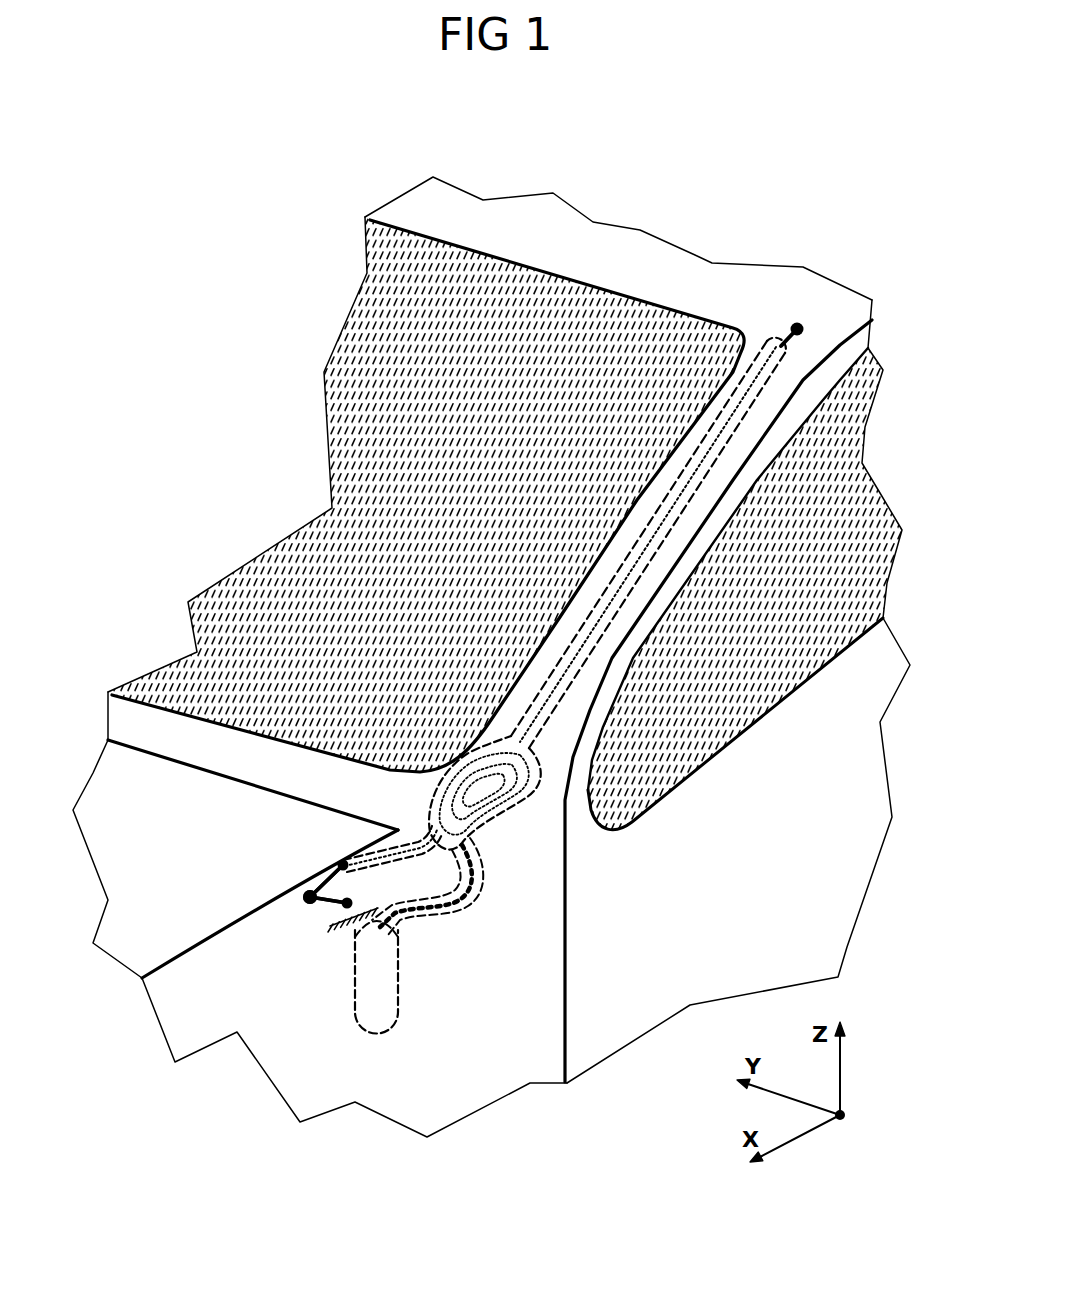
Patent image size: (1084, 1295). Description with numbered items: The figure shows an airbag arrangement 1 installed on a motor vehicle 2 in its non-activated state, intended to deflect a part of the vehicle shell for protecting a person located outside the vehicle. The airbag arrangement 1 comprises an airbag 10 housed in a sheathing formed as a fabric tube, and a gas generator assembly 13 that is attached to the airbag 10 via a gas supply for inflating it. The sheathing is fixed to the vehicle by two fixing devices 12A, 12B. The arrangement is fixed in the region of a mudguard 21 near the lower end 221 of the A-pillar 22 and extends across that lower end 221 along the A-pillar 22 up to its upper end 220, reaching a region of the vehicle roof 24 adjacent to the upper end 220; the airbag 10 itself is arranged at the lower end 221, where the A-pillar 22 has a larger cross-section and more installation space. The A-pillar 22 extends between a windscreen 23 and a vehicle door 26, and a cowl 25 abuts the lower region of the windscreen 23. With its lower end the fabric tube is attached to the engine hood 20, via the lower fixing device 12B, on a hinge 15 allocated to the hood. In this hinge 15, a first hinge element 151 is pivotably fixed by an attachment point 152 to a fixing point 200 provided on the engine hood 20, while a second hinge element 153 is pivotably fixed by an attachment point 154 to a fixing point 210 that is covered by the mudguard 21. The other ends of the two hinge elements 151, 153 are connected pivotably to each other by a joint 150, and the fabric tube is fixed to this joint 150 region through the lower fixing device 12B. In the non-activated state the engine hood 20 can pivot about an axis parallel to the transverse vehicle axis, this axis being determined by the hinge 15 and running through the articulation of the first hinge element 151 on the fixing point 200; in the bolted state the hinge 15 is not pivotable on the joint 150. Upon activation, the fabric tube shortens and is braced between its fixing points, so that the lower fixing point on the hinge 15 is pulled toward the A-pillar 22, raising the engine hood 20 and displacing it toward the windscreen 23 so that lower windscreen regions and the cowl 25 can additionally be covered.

The airbag arrangement 1 is at (491, 708).
The motor vehicle 2 is at (222, 251).
The airbag 10 is at (500, 777).
The fixing device 12A is at (800, 325).
The fixing device 12B is at (229, 885).
The gas generator assembly 13 is at (347, 1029).
The hinge 15 is at (292, 935).
The engine hood 20 is at (113, 808).
The mudguard 21 is at (468, 1068).
The A-pillar 22 is at (717, 471).
The windscreen 23 is at (373, 328).
The vehicle roof 24 is at (483, 218).
The cowl 25 is at (200, 733).
The vehicle door 26 is at (612, 1050).
The joint 150 is at (304, 895).
The first hinge element 151 is at (320, 885).
The attachment point 152 is at (341, 862).
The second hinge element 153 is at (323, 905).
The attachment point 154 is at (345, 910).
The fixing point 200 is at (367, 858).
The fixing point 210 is at (332, 913).
The upper end 220 is at (822, 329).
The lower end 221 is at (543, 815).